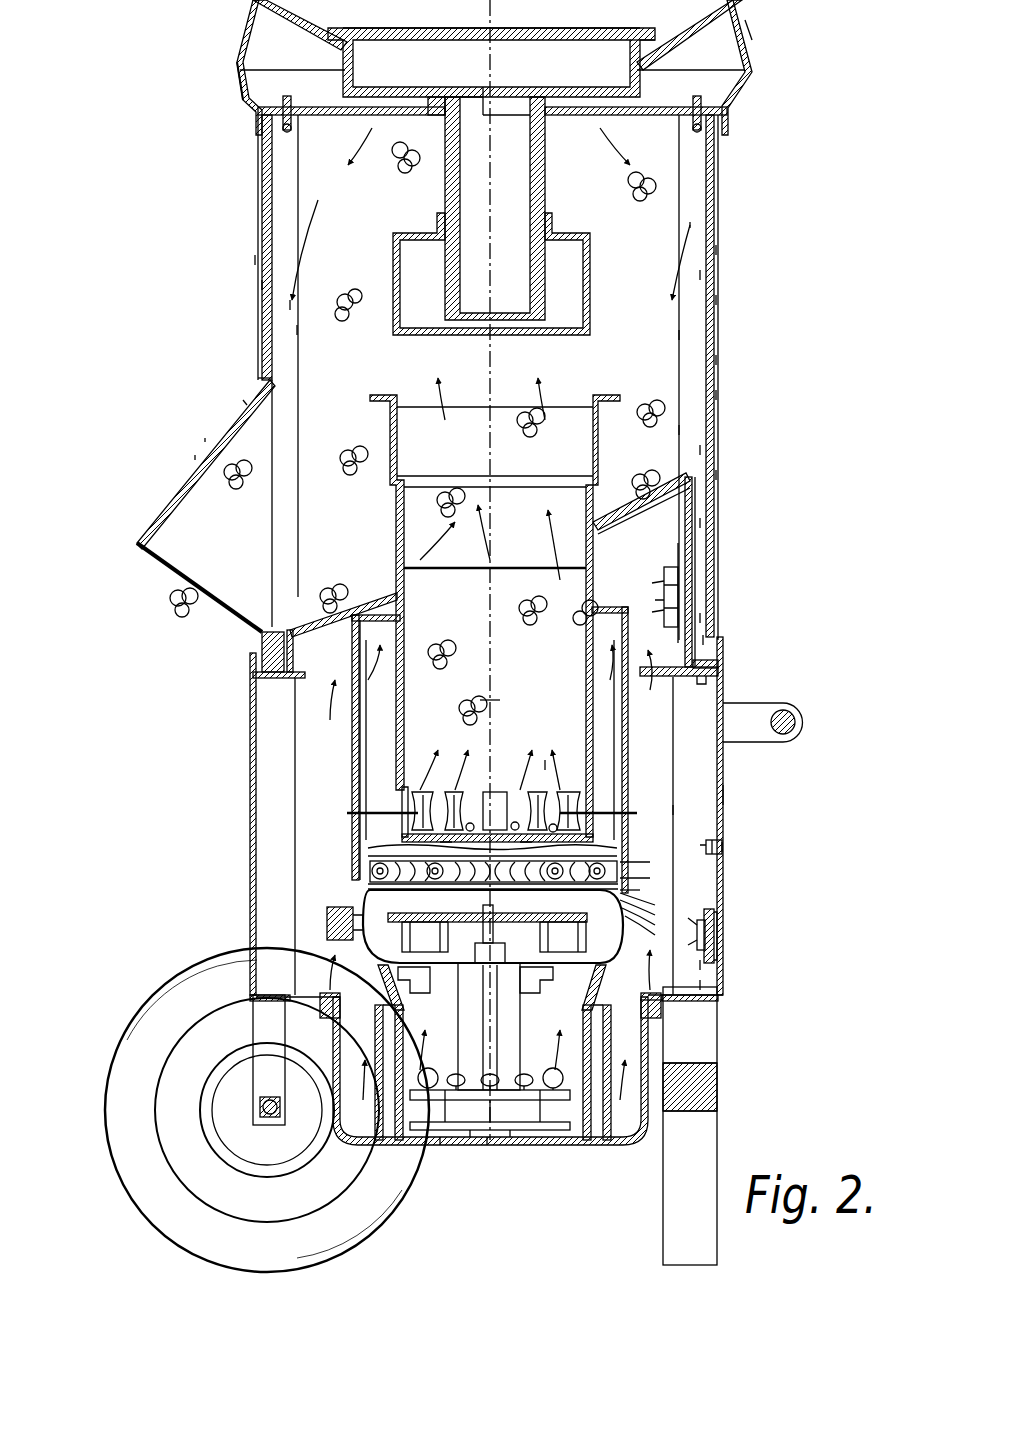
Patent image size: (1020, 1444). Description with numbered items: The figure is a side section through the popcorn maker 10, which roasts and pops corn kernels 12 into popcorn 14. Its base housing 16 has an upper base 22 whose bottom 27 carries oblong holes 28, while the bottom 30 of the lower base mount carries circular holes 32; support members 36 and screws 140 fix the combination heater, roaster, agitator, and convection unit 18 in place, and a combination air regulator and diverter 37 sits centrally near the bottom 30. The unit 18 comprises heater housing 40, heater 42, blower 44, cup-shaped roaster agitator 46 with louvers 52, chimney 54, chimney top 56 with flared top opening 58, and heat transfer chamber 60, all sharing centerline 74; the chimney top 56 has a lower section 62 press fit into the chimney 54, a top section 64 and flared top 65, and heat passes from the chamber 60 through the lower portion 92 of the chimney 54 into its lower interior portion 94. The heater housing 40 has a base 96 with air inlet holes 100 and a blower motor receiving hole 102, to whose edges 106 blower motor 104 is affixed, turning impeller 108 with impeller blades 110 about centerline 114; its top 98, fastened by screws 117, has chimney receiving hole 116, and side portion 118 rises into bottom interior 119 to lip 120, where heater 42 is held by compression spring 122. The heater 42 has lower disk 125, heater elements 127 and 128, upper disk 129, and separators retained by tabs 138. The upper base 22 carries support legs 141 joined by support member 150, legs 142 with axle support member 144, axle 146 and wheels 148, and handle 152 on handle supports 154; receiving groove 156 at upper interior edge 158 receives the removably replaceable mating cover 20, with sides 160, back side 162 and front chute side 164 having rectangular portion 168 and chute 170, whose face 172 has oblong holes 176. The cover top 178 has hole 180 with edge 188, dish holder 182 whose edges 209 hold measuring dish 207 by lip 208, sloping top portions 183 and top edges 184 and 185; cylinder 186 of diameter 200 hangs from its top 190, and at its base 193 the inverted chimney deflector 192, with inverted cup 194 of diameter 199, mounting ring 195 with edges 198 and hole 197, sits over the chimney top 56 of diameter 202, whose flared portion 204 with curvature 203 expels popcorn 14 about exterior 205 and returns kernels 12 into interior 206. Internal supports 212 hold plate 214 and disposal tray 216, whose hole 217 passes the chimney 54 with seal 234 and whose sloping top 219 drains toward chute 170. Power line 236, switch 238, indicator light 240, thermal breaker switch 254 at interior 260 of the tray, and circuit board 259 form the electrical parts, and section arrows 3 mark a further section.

The popcorn maker 10 is at (135, 52).
The corn kernels 12 is at (545, 760).
The popped corn 14 is at (182, 484).
The base housing 16 is at (730, 795).
The combination heater, roaster, agitator, and convection unit 18 is at (692, 778).
The removably replaceable mating cover 20 is at (722, 395).
The upper base 22 is at (702, 523).
The bottom 27 is at (730, 1030).
The oblong holes 28 is at (150, 1003).
The bottom 30 is at (510, 1150).
The circular holes 32 is at (530, 1150).
The support members 36 is at (118, 1080).
The combination air regulator and diverter 37 is at (450, 1150).
The heater housing 40 is at (312, 785).
The heater 42 is at (740, 825).
The blower 44 is at (165, 990).
The roaster agitator 46 is at (700, 810).
The louvers 52 is at (455, 780).
The chimney 54 is at (692, 663).
The chimney top 56 is at (682, 430).
The flared top opening 58 is at (262, 360).
The heat transfer chamber 60 is at (690, 685).
The lower section 62 is at (700, 500).
The top section 64 is at (242, 400).
The flared top 65 is at (260, 380).
The centerline 74 is at (487, 1150).
The lower portion 92 is at (300, 740).
The lower interior portion 94 is at (500, 689).
The base 96 is at (720, 1000).
The top 98 is at (300, 815).
The air inlet holes 100 is at (125, 1035).
The blower motor receiving hole 102 is at (150, 1055).
The blower motor M1 104 is at (465, 1150).
The edges 106 is at (560, 1150).
The impeller 108 is at (700, 985).
The impeller blades 110 is at (700, 965).
The centerline 114 is at (505, 1150).
The chimney receiving hole 116 is at (690, 575).
The screws 117 is at (300, 925).
The side portion 118 is at (296, 950).
The bottom interior 119 is at (735, 930).
The lip 120 is at (290, 905).
The compression spring 122 is at (360, 850).
The lower disk 125 is at (700, 885).
The heater element H1 127 is at (330, 885).
The heater element H2 128 is at (700, 870).
The upper disk 129 is at (350, 866).
The tabs 138 is at (302, 38).
The screws 140 is at (720, 1068).
The support legs 141 is at (690, 1138).
The legs 142 is at (110, 1108).
The axle support member 144 is at (115, 1135).
The axle 146 is at (120, 1160).
The wheels 148 is at (165, 1200).
The support member 150 is at (700, 1095).
The handle 152 is at (800, 705).
The handle supports 154 is at (797, 720).
The receiving groove 156 is at (702, 618).
The upper interior edge 158 is at (705, 640).
The sides 160 is at (682, 335).
The back side 162 is at (720, 250).
The front chute side 164 is at (270, 150).
The rectangular portion 168 is at (264, 285).
The chute 170 is at (190, 592).
The face 172 is at (212, 440).
The oblong holes 176 is at (197, 458).
The top 178 is at (756, 28).
The hole 180 is at (540, 97).
The cylindrical dish holder 182 is at (250, 95).
The sloping top portions 183 is at (690, 25).
The top edge 184 is at (240, 60).
The top edge 185 is at (262, 118).
The cylinder 186 is at (700, 193).
The edge 188 is at (487, 90).
The top 190 is at (720, 150).
The inverted chimney deflector 192 is at (718, 300).
The base 193 is at (700, 275).
The inverted cylindrically shaped cup 194 is at (256, 260).
The mounting ring 195 is at (300, 205).
The hole 197 is at (690, 225).
The edges 198 is at (290, 190).
The diameter 199 is at (400, 345).
The diameter 200 is at (565, 90).
The diameter 202 is at (583, 457).
The curvature 203 is at (718, 360).
The flared portion 204 is at (297, 330).
The exterior 205 is at (292, 305).
The interior 206 is at (435, 82).
The measuring dish 207 is at (478, 40).
The lip 208 is at (383, 33).
The edges 209 is at (238, 46).
The internal supports 212 is at (345, 760).
The plate 214 is at (290, 690).
The disposal tray 216 is at (262, 635).
The hole 217 is at (152, 532).
The sloping top 219 is at (720, 475).
The seal 234 is at (702, 450).
The power line 236 is at (740, 905).
The switch S1 238 is at (738, 950).
The indicator light LED1 240 is at (735, 845).
The thermal breaker switch ST1 254 is at (697, 545).
The circuit board 259 is at (515, 1150).
The interior 260 is at (700, 595).
The section line 3- 3 is at (377, 804).